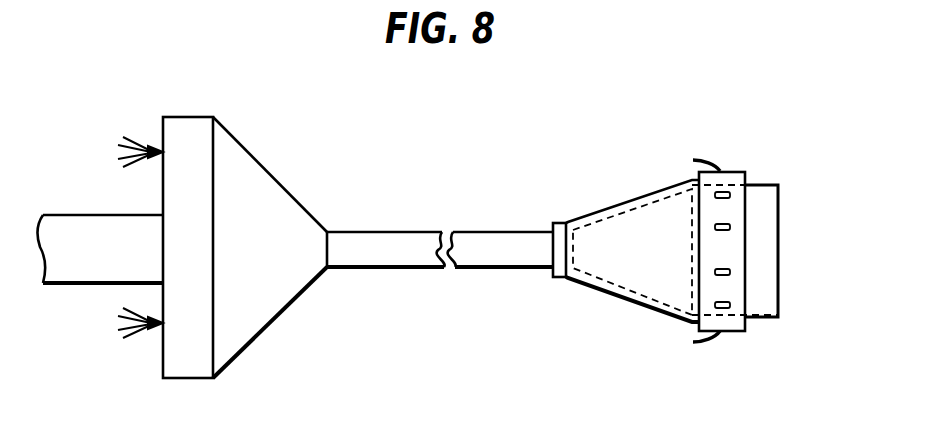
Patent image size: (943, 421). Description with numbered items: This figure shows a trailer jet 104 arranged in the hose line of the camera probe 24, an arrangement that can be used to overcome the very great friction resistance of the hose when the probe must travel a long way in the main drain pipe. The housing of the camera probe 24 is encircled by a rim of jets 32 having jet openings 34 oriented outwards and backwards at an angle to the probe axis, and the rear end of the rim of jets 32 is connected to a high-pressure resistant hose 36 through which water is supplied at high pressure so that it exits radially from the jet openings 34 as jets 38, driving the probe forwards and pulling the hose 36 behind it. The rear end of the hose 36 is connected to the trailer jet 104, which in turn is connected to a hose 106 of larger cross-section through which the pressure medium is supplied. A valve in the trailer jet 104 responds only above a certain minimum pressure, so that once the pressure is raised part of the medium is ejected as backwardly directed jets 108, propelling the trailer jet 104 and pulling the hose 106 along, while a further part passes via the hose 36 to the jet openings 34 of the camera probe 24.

The camera probe 24 is at (710, 96).
The rim of jets 32 is at (730, 170).
The jet openings 34 is at (730, 227).
The high-pressure resistant hose 36 is at (390, 232).
The jets 38 is at (720, 331).
The trailer jet 104 is at (265, 165).
The hose 106 is at (70, 283).
The backwardly directed jets 108 is at (133, 338).